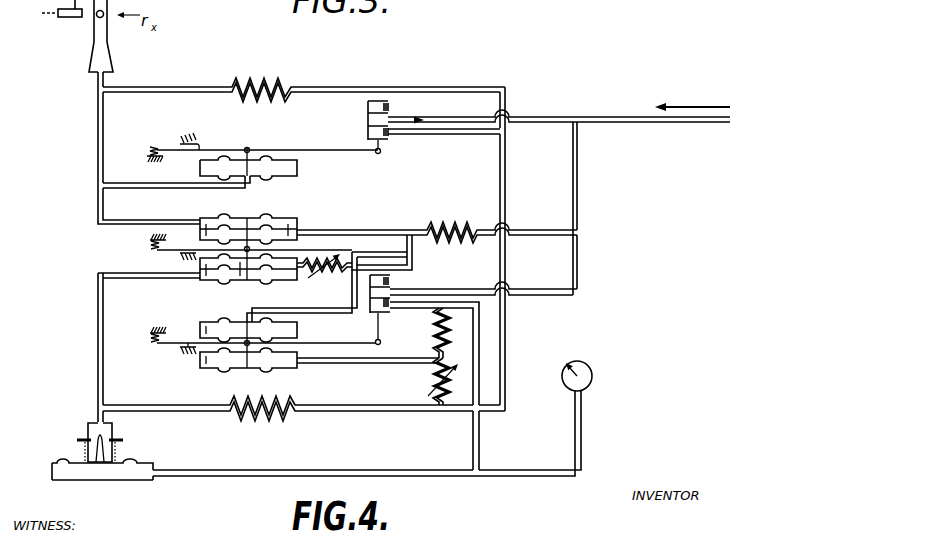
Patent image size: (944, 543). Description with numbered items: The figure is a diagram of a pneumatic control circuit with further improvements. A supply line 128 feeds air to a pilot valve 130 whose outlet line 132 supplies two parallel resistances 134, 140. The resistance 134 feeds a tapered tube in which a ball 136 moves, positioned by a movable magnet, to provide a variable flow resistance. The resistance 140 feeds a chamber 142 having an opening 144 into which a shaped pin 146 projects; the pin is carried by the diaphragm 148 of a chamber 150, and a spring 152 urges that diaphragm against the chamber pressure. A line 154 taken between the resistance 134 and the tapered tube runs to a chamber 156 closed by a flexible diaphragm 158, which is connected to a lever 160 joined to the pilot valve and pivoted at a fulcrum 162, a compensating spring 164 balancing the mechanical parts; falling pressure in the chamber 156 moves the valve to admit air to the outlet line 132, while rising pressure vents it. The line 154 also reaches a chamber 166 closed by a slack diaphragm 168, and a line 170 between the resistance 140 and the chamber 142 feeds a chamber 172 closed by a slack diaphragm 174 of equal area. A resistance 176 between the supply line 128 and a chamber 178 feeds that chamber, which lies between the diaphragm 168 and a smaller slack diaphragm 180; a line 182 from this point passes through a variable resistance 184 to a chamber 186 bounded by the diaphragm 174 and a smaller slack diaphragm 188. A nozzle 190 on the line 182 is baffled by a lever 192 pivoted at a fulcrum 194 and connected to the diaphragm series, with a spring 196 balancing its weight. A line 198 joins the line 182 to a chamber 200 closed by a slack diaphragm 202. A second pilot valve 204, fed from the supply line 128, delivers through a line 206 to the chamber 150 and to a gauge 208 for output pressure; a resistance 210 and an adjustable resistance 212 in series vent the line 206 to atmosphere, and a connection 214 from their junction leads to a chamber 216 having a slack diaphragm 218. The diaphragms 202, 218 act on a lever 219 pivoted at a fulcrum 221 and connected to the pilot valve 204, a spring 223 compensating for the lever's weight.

The line 128 is at (628, 122).
The pilot valve 130 is at (392, 113).
The outlet line 132 is at (418, 134).
The resistance 134 is at (272, 86).
The ball 136 is at (93, 18).
The resistance 140 is at (263, 421).
The chamber 142 is at (107, 432).
The opening 144 is at (92, 433).
The pin 146 is at (120, 453).
The diaphragm 148 is at (52, 470).
The chamber 150 is at (105, 478).
The spring 152 is at (83, 450).
The line 154 is at (104, 146).
The chamber 156 is at (298, 170).
The flexible diaphragm 158 is at (277, 162).
The lever 160 is at (336, 153).
The fulcrum 162 is at (198, 142).
The compensating spring 164 is at (150, 152).
The chamber 166 is at (249, 223).
The slack diaphragm 168 is at (284, 232).
The line 170 is at (98, 350).
The chamber 172 is at (222, 278).
The slack diaphragm 174 is at (273, 276).
The resistance 176 is at (447, 227).
The chamber 178 is at (208, 224).
The slack diaphragm 180 is at (298, 222).
The line 182 is at (413, 255).
The variable resistance 184 is at (318, 278).
The chamber 186 is at (210, 278).
The slack diaphragm 188 is at (245, 274).
The nozzle 190 is at (362, 253).
The lever 192 is at (338, 253).
The fulcrum 194 is at (177, 257).
The spring 196 is at (152, 243).
The line 198 is at (320, 313).
The chamber 200 is at (200, 328).
The slack diaphragm 202 is at (227, 333).
The pilot valve 204 is at (392, 288).
The line 206 is at (480, 433).
The gauge 208 is at (593, 375).
The resistance 210 is at (436, 333).
The adjustable resistance 212 is at (436, 380).
The connection 214 is at (313, 363).
The chamber 216 is at (205, 362).
The slack diaphragm 218 is at (221, 366).
The lever 219 is at (313, 343).
The fulcrum 221 is at (181, 349).
The spring 223 is at (151, 334).